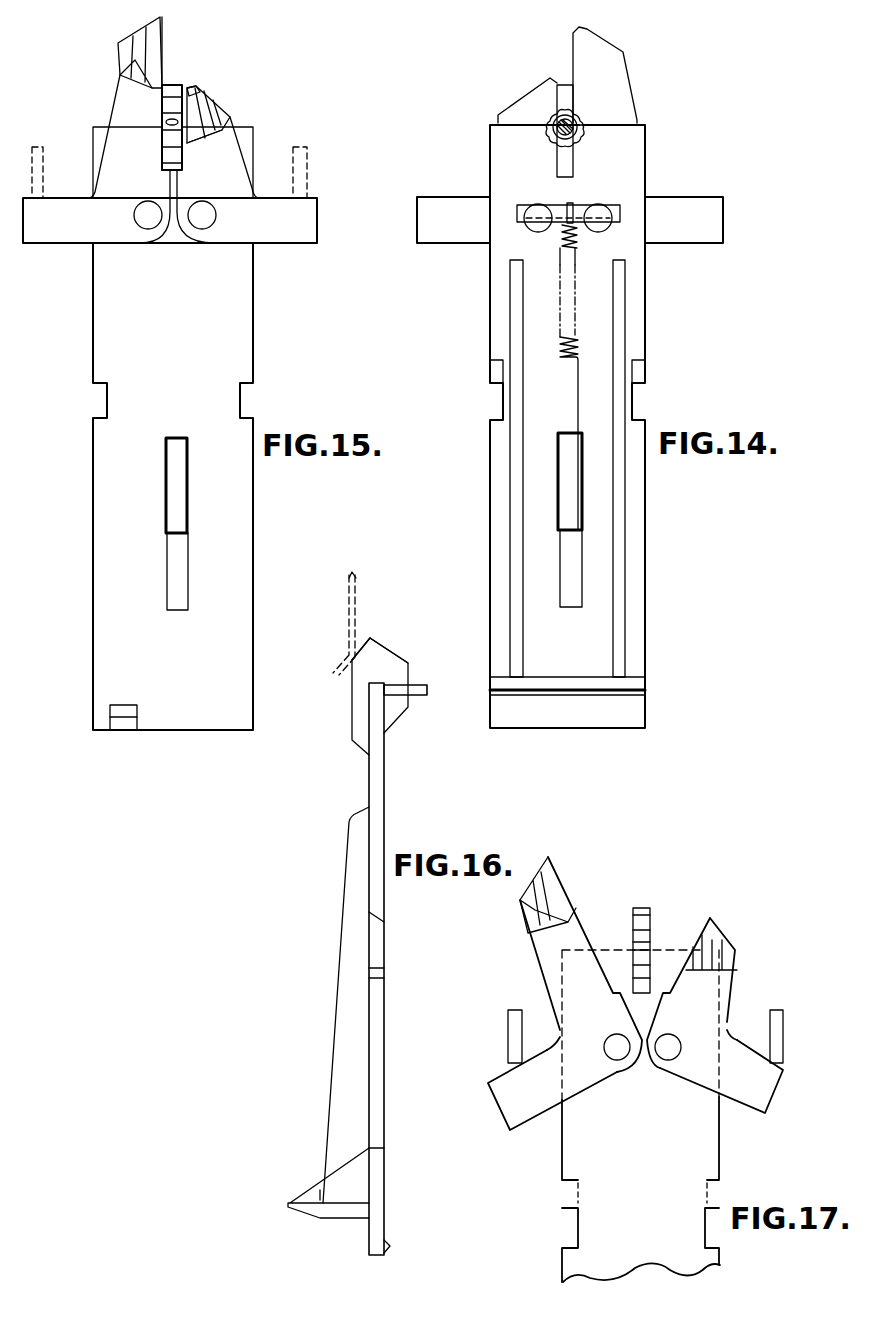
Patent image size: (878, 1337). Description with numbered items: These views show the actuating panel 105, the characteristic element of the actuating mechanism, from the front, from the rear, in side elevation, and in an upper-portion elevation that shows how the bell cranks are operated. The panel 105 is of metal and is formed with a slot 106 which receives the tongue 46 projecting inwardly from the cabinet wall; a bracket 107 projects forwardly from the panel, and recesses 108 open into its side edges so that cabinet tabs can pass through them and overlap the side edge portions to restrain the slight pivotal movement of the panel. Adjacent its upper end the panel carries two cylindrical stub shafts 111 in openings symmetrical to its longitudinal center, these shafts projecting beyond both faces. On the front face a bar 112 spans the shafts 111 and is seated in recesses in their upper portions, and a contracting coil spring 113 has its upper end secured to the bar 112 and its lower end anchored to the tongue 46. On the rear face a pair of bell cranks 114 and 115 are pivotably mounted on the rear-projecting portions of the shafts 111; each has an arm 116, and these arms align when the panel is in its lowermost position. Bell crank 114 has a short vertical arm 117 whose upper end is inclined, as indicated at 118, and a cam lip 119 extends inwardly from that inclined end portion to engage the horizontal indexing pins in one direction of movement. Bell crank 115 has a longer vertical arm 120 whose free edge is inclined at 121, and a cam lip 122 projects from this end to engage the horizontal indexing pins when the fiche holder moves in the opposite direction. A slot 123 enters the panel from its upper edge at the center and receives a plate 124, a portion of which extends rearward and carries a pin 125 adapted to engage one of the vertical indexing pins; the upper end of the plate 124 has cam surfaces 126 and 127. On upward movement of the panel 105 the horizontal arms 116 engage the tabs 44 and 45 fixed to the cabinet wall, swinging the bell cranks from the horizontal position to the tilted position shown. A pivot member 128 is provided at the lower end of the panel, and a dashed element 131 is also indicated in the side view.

In FIG. 17, the tab 44 is at (508, 1042).
In FIG. 17, the tab 45 is at (783, 1038).
In FIG. 15, the tongue 46 is at (178, 453).
In FIG. 14, the tongue 46 is at (570, 443).
In FIG. 15, the actuating panel 105 is at (207, 710).
In FIG. 14, the actuating panel 105 is at (638, 652).
In FIG. 16, the actuating panel 105 is at (370, 1195).
In FIG. 17, the actuating panel 105 is at (705, 1157).
In FIG. 15, the slot 106 is at (180, 597).
In FIG. 14, the bracket 107 is at (612, 682).
In FIG. 16, the bracket 107 is at (307, 1197).
In FIG. 14, the recess 108 is at (502, 403).
In FIG. 16, the recess 108 is at (367, 953).
In FIG. 14, the stub shaft 111 is at (538, 212).
In FIG. 14, the bar 112 is at (578, 210).
In FIG. 14, the contracting coil spring 113 is at (560, 340).
In FIG. 15, the bell crank 114 is at (212, 235).
In FIG. 17, the bell crank 114 is at (700, 1077).
In FIG. 15, the bell crank 115 is at (137, 235).
In FIG. 17, the bell crank 115 is at (598, 1075).
In FIG. 15, the arm 116 is at (282, 233).
In FIG. 17, the arm 116 is at (532, 1113).
In FIG. 15, the short vertical arm 117 is at (225, 167).
In FIG. 15, the inclined end 118 is at (213, 113).
In FIG. 15, the cam lip 119 is at (187, 92).
In FIG. 15, the vertical arm 120 is at (120, 103).
In FIG. 15, the inclined edge 121 is at (135, 33).
In FIG. 15, the cam lip 122 is at (163, 47).
In FIG. 14, the slot 123 is at (574, 160).
In FIG. 16, the plate 124 is at (377, 667).
In FIG. 15, the pin 125 is at (170, 127).
In FIG. 16, the pin 125 is at (428, 695).
In FIG. 17, the pin 125 is at (641, 950).
In FIG. 16, the cam surface 126 is at (362, 647).
In FIG. 16, the cam surface 127 is at (410, 665).
In FIG. 16, the pivot member 128 is at (385, 1245).
In FIG. 16, the wire 131 is at (347, 623).